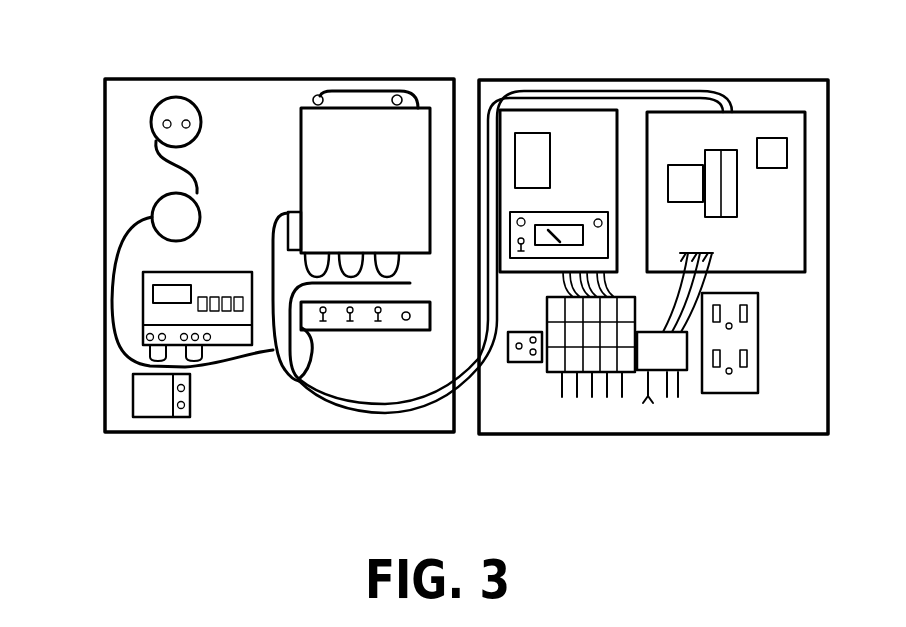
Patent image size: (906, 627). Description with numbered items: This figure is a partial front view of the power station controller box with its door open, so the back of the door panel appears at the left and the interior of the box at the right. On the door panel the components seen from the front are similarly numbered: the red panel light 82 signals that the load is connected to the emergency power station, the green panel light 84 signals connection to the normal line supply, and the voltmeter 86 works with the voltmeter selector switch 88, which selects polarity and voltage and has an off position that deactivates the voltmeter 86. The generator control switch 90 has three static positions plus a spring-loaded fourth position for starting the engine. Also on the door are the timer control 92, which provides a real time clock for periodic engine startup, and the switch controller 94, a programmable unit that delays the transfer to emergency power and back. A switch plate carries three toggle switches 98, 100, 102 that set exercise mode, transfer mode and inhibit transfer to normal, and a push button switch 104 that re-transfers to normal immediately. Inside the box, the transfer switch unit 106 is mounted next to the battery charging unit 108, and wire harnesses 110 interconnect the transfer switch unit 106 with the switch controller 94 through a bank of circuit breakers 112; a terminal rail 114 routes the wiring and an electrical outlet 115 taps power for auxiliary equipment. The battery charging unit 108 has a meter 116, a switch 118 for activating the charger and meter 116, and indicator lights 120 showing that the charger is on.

The red panel light 82 is at (318, 94).
The green panel light 84 is at (397, 94).
The voltmeter 86 is at (151, 123).
The voltmeter selector switch 88 is at (152, 208).
The generator control switch 90 is at (133, 381).
The timer control 92 is at (143, 291).
The switch controller 94 is at (300, 164).
The toggle switch 98 is at (335, 304).
The toggle switch 100 is at (352, 318).
The toggle switch 102 is at (393, 305).
The push button switch 104 is at (410, 318).
The transfer switch unit 106 is at (771, 112).
The battery charging unit 108 is at (552, 110).
The wire harnesses 110 is at (683, 91).
The bank of circuit breakers 112 is at (562, 378).
The terminal rail 114 is at (660, 398).
The electrical outlet 115 is at (758, 340).
The meter 116 is at (582, 225).
The switch 118 is at (524, 258).
The indicator lights 120 is at (513, 222).